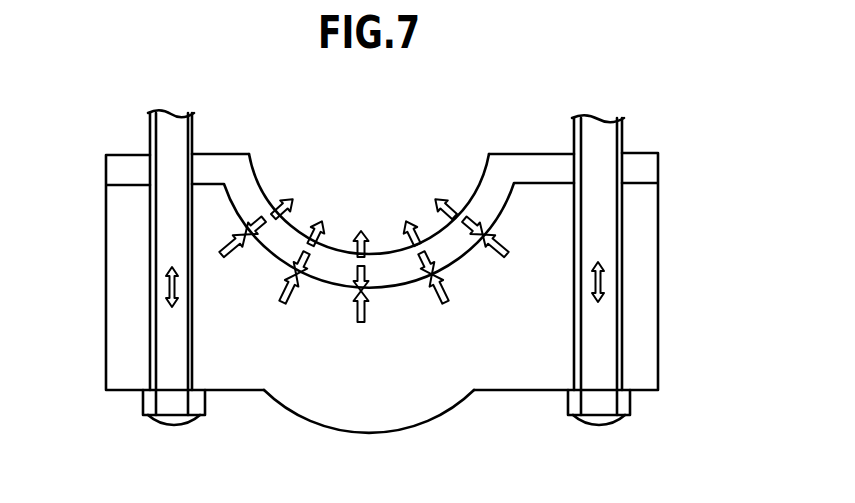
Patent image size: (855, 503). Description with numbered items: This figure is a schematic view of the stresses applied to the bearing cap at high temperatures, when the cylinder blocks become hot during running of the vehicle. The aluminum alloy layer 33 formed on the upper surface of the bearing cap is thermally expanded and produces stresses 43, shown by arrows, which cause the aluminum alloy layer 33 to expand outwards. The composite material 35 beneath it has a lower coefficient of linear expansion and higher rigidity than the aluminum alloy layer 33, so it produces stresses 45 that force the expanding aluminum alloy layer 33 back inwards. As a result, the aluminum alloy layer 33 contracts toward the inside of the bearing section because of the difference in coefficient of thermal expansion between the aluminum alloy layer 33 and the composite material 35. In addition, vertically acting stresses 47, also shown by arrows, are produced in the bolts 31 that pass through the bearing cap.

The bolts 31 is at (177, 360).
The aluminum alloy layer 33 is at (247, 190).
The composite material 35 is at (322, 380).
The stresses 43 is at (488, 228).
The stresses 45 is at (503, 240).
The vertically acting stresses 47 is at (605, 278).